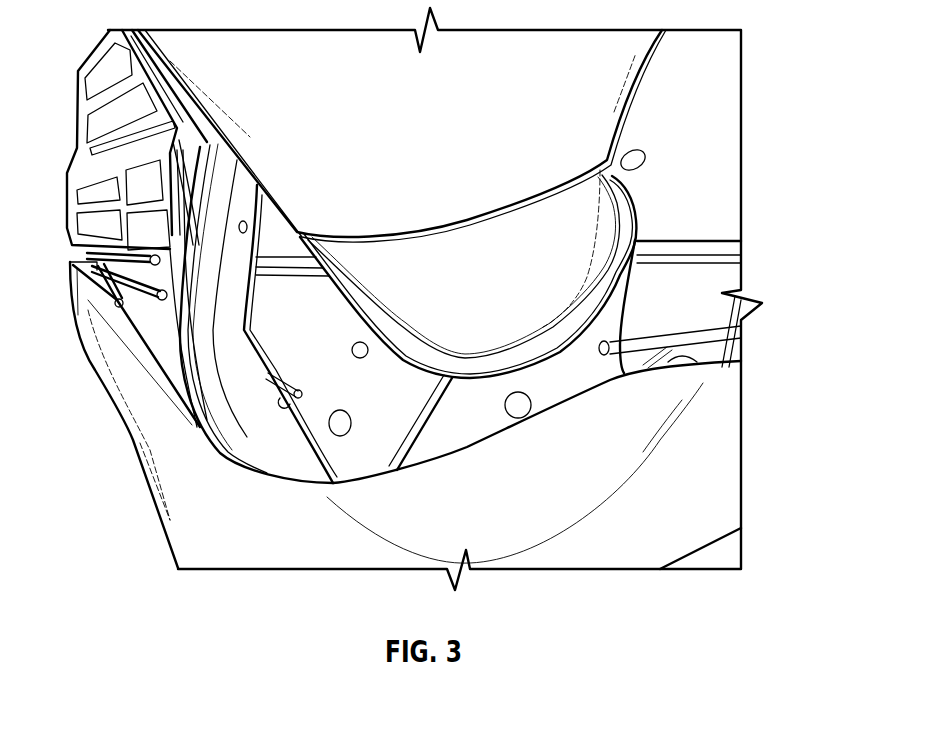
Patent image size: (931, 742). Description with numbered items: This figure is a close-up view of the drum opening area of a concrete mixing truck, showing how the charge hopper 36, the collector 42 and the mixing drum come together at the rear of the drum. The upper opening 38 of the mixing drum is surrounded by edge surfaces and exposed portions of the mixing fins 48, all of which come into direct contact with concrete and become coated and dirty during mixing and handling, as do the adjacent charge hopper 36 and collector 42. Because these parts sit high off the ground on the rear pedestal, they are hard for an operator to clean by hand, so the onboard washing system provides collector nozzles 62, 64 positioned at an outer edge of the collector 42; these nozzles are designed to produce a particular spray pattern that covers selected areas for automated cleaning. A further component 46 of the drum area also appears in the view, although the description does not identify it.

The charge hopper 36 is at (455, 137).
The upper opening 38 is at (718, 230).
The collector 42 is at (603, 447).
The hub ring 46 is at (223, 401).
The mixing fins 48 is at (693, 292).
The collector nozzle 62 is at (95, 268).
The collector nozzle 64 is at (740, 335).